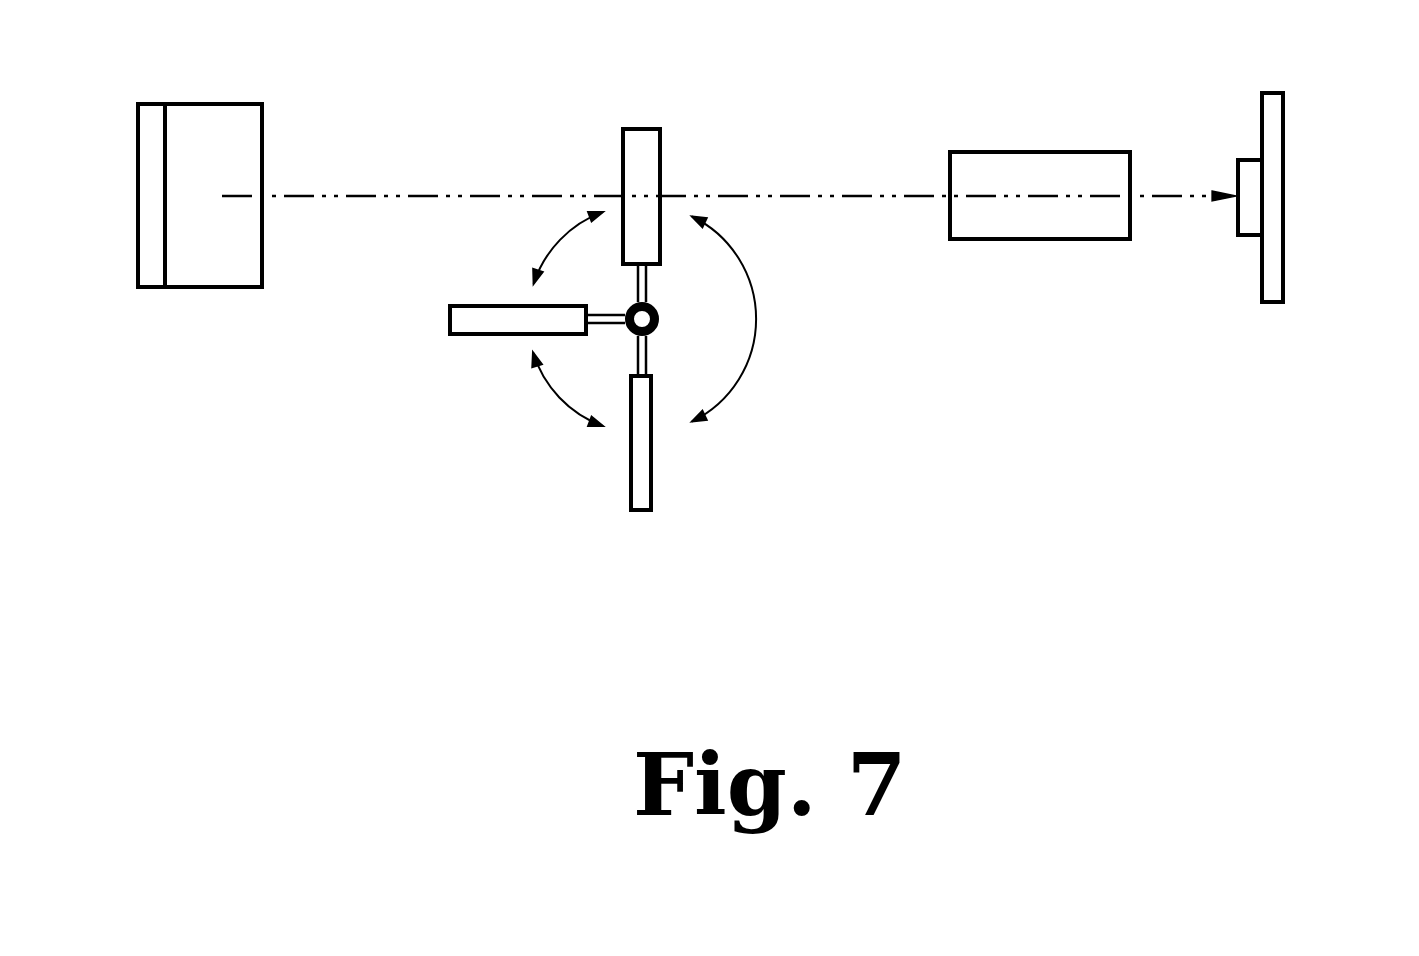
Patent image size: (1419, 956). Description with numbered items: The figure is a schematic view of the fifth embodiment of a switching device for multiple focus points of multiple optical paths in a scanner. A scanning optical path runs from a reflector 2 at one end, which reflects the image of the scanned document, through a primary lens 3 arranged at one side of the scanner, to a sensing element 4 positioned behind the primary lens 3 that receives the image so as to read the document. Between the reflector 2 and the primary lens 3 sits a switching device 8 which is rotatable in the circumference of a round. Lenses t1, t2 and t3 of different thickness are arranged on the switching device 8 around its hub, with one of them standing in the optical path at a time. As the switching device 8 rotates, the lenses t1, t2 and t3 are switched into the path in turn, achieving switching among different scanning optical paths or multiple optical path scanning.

The reflector 2 is at (210, 266).
The primary lens 3 is at (1024, 170).
The sensing element 4 is at (1273, 188).
The switching device 8 is at (642, 319).
The lens t1 is at (641, 468).
The lens t2 is at (488, 322).
The lens t3 is at (645, 160).